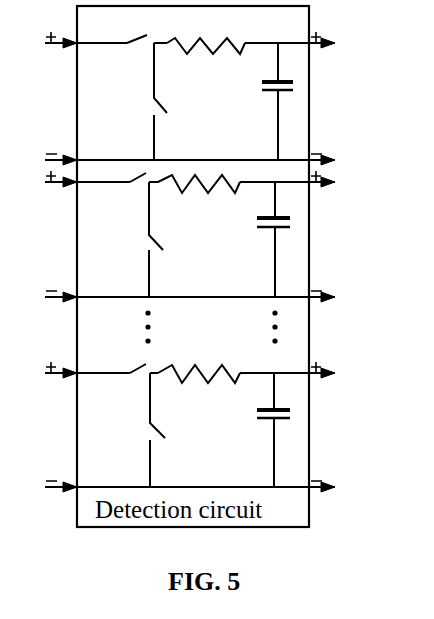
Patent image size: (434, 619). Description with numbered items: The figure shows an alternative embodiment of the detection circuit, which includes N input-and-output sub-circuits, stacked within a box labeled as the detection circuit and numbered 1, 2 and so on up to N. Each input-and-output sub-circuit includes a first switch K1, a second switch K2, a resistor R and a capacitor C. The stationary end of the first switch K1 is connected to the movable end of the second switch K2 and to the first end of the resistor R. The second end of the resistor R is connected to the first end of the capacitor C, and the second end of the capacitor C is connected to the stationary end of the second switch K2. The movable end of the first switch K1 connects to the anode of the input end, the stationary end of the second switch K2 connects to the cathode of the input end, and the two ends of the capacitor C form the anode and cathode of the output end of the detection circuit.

The first switch K1 is at (140, 27).
The second switch K2 is at (144, 101).
The resistor R is at (206, 60).
The capacitor C is at (262, 101).
The first battery cell channel 1 is at (187, 98).
The second battery cell channel 2 is at (190, 247).
The input-and-output sub-circuits N is at (187, 432).